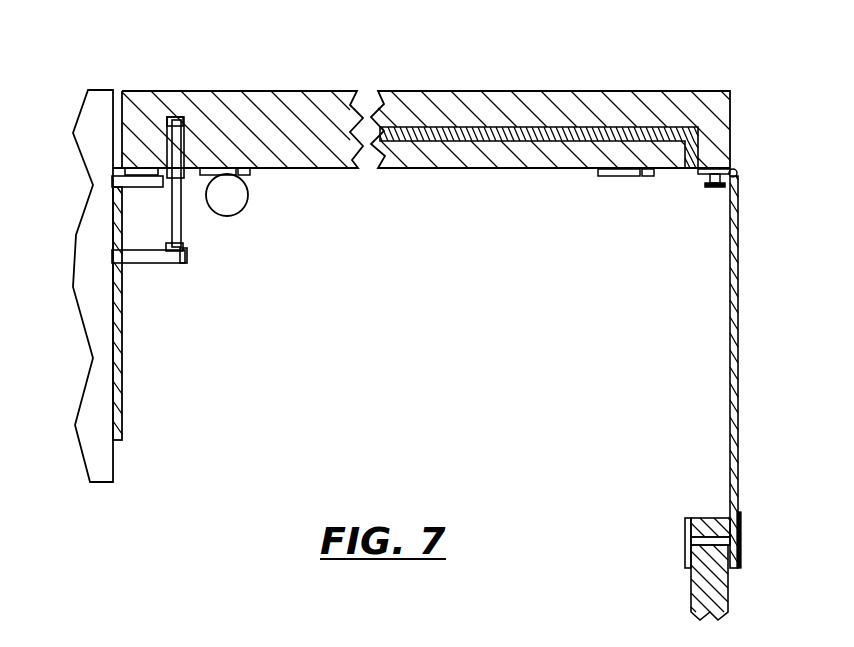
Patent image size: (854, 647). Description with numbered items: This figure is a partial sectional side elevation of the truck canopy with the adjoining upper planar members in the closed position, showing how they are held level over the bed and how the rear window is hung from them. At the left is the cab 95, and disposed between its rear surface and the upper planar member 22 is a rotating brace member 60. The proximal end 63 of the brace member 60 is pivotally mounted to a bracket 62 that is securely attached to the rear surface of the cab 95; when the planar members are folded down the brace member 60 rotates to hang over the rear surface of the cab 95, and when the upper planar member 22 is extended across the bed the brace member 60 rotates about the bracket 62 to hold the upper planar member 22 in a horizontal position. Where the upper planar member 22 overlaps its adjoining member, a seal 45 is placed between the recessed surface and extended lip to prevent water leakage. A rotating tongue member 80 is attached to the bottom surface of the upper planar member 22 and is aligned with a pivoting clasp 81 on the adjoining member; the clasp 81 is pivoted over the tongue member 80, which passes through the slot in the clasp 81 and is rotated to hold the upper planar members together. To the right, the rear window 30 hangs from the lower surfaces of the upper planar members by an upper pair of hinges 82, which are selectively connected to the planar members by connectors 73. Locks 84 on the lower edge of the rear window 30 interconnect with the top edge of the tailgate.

The upper planar member 22 is at (422, 93).
The seal 45 is at (535, 141).
The cab 95 is at (98, 265).
The rotating brace member 60 is at (181, 226).
The proximal end 63 is at (178, 117).
The bracket 62 is at (188, 254).
The rotating tongue member 80 is at (237, 200).
The pivoting clasp 81 is at (243, 173).
The connectors 73 is at (717, 168).
The hinges 82 is at (738, 176).
The rear window 30 is at (730, 322).
The locks 84 is at (688, 528).